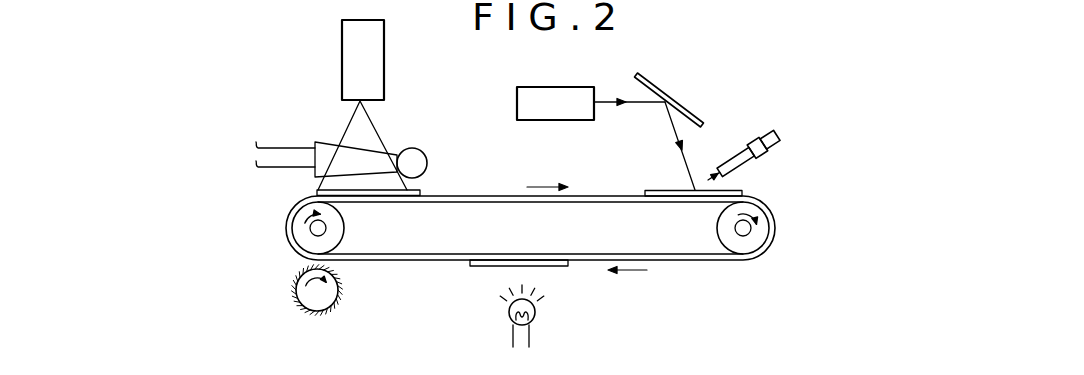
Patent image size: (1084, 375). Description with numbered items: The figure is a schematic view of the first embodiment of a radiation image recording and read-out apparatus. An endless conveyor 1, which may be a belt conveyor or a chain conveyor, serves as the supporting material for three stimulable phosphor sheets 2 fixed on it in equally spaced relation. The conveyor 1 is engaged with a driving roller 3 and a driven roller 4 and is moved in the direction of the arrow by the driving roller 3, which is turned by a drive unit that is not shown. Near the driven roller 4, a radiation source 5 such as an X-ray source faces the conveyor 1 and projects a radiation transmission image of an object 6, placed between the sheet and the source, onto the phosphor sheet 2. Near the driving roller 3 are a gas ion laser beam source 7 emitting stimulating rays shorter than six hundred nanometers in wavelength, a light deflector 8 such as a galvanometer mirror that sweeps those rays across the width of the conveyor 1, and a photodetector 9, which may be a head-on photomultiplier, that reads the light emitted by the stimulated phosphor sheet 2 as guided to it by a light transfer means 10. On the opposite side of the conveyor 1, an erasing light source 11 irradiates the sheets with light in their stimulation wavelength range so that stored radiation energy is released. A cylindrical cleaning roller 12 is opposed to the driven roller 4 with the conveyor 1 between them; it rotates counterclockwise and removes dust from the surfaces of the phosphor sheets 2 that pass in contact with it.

The endless conveyor 1 is at (690, 262).
The stimulable phosphor sheets 2 is at (420, 192).
The driving roller 3 is at (762, 237).
The driven roller 4 is at (298, 233).
The radiation source 5 is at (384, 67).
The object 6 is at (327, 133).
The gas ion laser beam source 7 is at (575, 120).
The light deflector 8 is at (688, 108).
The photodetector 9 is at (756, 130).
The light transfer means 10 is at (729, 156).
The erasing light source 11 is at (536, 313).
The cleaning roller 12 is at (328, 293).